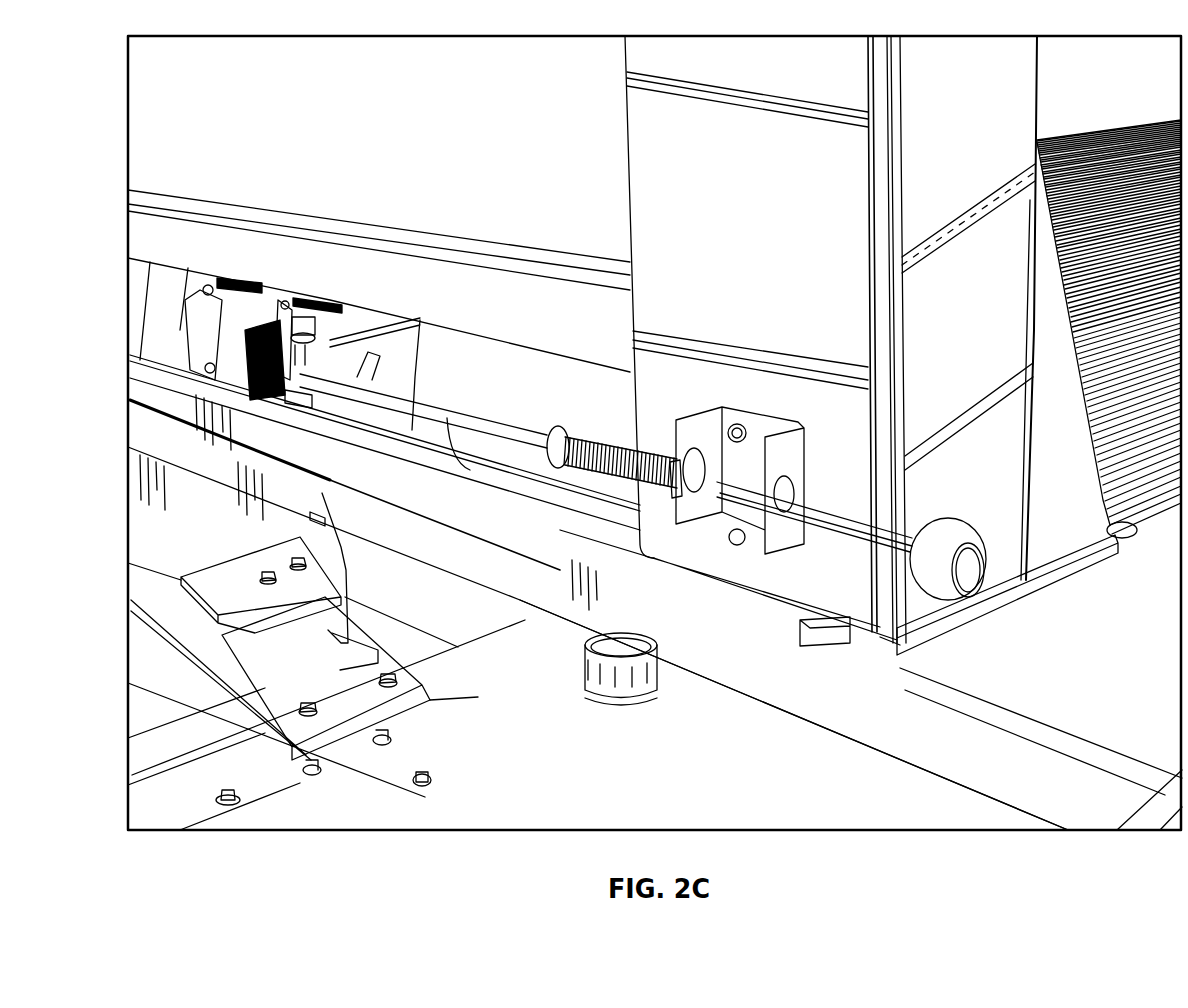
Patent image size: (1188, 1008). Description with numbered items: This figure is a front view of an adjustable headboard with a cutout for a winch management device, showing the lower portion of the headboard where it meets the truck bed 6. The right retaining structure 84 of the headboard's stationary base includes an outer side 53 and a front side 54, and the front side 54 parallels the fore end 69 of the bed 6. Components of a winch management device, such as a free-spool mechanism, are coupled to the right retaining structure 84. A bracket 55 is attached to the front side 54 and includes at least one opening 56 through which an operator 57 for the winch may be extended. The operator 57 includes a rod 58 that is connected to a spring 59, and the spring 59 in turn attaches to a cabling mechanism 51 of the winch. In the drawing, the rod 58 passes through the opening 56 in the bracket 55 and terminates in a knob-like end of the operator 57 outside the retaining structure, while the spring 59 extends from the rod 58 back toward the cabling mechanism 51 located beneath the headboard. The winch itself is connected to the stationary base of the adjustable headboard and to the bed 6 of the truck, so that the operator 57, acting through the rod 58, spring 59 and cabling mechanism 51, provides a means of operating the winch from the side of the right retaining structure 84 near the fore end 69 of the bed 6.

The bed 6 is at (478, 697).
The cabling mechanism 51 is at (272, 320).
The outer side 53 is at (1037, 102).
The front side 54 is at (627, 147).
The bracket 55 is at (737, 405).
The opening 56 is at (677, 457).
The operator 57 is at (947, 517).
The rod 58 is at (827, 510).
The spring 59 is at (592, 437).
The fore end 69 is at (742, 683).
The right retaining structure 84 is at (840, 655).